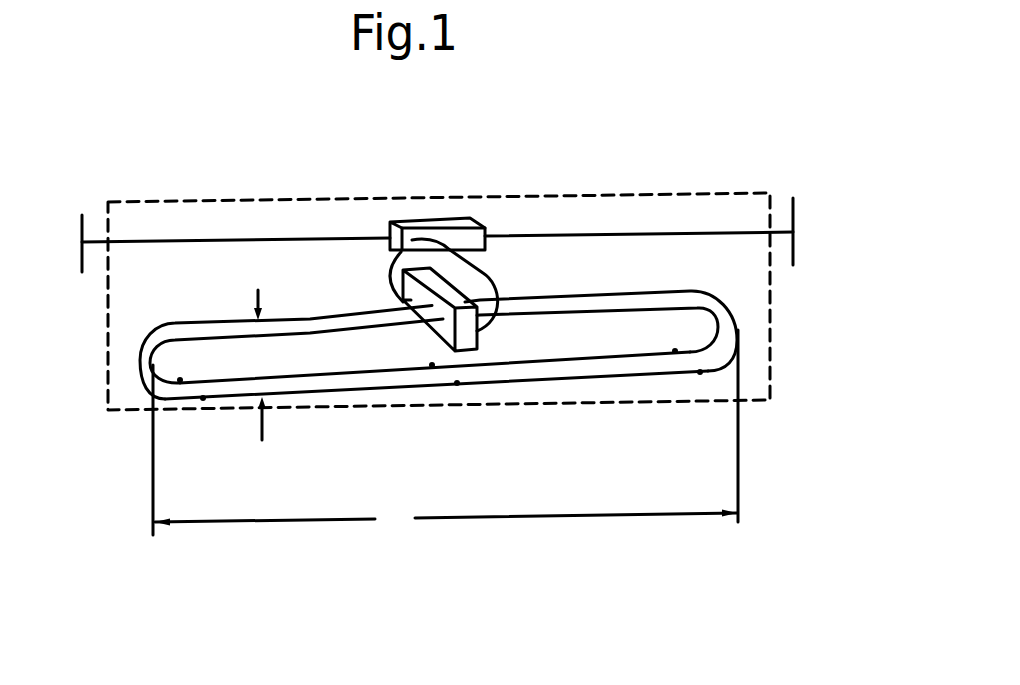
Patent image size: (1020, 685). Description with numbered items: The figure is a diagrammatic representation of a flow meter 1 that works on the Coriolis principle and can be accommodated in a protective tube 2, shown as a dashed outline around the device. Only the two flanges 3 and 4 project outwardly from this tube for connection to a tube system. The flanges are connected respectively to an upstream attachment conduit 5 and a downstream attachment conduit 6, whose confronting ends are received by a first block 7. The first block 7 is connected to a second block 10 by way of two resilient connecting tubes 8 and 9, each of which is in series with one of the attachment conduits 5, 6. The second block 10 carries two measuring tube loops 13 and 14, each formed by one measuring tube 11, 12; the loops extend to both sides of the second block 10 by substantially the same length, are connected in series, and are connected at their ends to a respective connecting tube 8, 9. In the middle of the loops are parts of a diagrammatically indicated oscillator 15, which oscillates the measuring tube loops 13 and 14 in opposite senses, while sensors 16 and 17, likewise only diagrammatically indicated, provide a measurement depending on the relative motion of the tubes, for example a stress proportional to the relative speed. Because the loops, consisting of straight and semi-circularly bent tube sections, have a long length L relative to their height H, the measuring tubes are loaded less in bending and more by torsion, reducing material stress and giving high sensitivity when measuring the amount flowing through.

The flow meter 1 is at (700, 214).
The protective tube 2 is at (567, 197).
The flange 3 is at (82, 228).
The flange 4 is at (795, 218).
The upstream attachment conduit 5 is at (285, 238).
The downstream attachment conduit 6 is at (618, 234).
The first block 7 is at (440, 222).
The resilient connecting tube 8 is at (490, 277).
The resilient connecting tube 9 is at (390, 272).
The second block 10 is at (470, 350).
The measuring tube 11 is at (698, 290).
The measuring tube 12 is at (650, 377).
The measuring tube loop 13 is at (557, 372).
The measuring tube loop 14 is at (603, 389).
The oscillator 15 is at (432, 366).
The sensor 16 is at (181, 381).
The sensor 17 is at (675, 352).
The height H is at (260, 356).
The length L is at (445, 436).